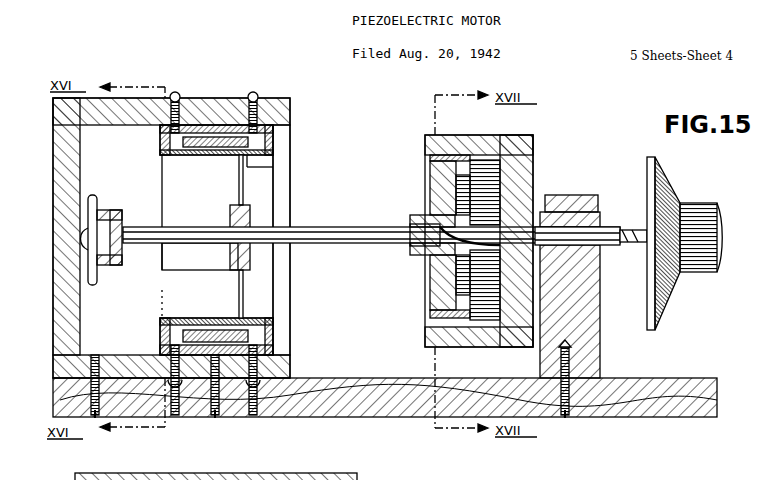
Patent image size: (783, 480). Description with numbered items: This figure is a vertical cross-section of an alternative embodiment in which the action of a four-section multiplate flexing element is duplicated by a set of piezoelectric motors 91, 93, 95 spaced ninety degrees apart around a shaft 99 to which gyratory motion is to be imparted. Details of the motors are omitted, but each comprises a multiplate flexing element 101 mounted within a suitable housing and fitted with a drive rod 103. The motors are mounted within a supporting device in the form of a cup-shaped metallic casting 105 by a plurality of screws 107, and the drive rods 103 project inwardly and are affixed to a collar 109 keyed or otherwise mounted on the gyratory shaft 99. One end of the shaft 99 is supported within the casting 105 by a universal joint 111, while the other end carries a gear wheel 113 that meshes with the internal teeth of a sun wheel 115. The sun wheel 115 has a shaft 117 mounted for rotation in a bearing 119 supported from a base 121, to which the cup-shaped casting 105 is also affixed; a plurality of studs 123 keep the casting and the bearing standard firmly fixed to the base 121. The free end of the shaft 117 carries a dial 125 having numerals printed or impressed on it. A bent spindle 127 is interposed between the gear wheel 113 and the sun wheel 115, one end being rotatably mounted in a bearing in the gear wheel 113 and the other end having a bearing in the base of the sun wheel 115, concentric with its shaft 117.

The piezoelectric motor 91 is at (280, 150).
The piezoelectric motor 93 is at (162, 197).
The piezoelectric motor 95 is at (276, 340).
The shaft 99 is at (310, 228).
The multiplate flexing element 101 is at (214, 140).
The drive rod 103 is at (262, 170).
The cup-shaped metallic casting 105 is at (56, 195).
The screws 107 is at (177, 92).
The collar 109 is at (252, 222).
The universal joint 111 is at (142, 291).
The gear wheel 113 is at (428, 185).
The sun wheel 115 is at (430, 140).
The shaft 117 is at (612, 253).
The bearing 119 is at (600, 210).
The base 121 is at (660, 395).
The studs 123 is at (92, 418).
The dial 125 is at (665, 305).
The bent spindle 127 is at (490, 240).